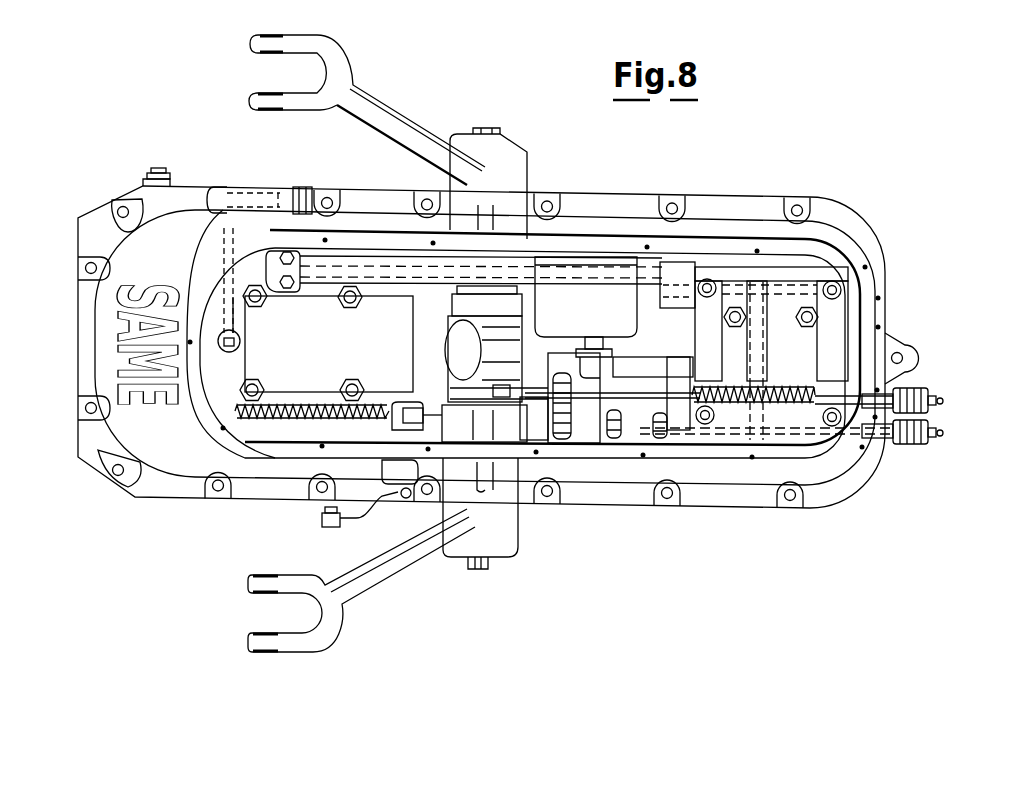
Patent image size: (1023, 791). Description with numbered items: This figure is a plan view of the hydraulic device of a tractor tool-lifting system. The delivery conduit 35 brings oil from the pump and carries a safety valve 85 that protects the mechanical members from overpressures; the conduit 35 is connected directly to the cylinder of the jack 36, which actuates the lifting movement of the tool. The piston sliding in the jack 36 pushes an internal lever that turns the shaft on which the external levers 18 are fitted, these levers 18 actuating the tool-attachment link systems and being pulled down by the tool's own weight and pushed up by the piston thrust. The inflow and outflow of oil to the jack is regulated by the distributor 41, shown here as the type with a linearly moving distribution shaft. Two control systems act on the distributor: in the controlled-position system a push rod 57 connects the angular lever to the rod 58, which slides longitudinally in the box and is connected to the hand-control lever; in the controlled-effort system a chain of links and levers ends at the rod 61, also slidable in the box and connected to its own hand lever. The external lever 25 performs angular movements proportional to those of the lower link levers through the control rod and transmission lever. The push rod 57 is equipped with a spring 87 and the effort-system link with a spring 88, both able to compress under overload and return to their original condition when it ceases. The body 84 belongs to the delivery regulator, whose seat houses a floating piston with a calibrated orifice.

The external levers 18 is at (409, 560).
The external lever 25 is at (357, 518).
The delivery conduit 35 is at (232, 286).
The jack 36 is at (237, 373).
The distributor 41 is at (623, 400).
The push rod 57 is at (680, 405).
The rod 58 is at (940, 401).
The rod 61 is at (940, 435).
The body 84 is at (278, 257).
The safety valve 85 is at (270, 260).
The spring 87 is at (773, 418).
The spring 88 is at (291, 422).